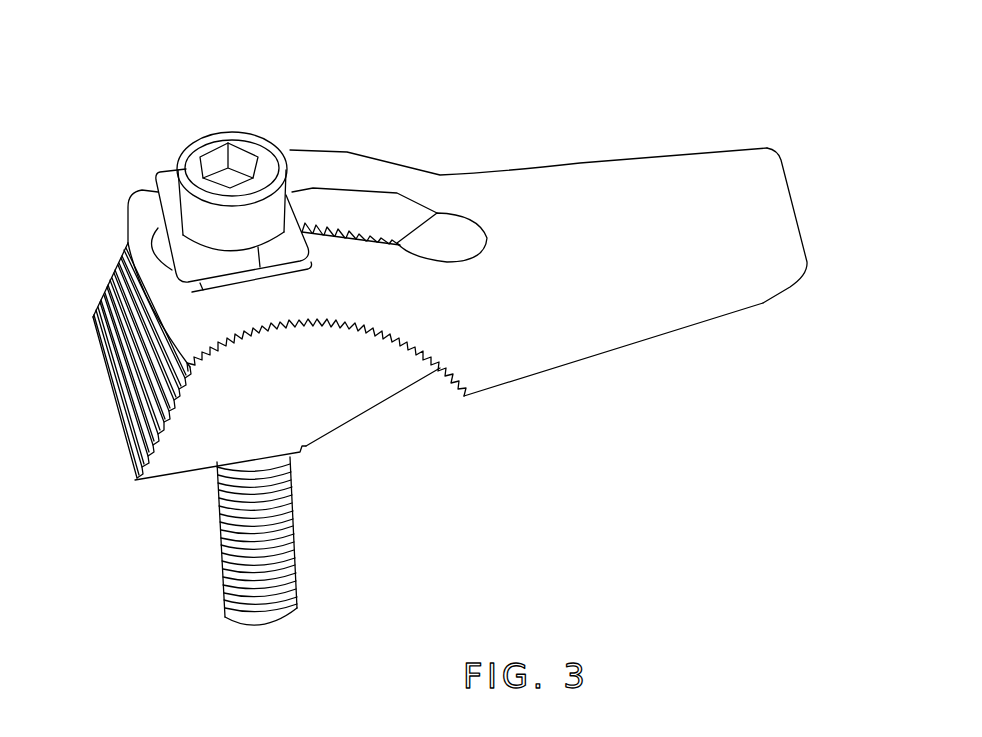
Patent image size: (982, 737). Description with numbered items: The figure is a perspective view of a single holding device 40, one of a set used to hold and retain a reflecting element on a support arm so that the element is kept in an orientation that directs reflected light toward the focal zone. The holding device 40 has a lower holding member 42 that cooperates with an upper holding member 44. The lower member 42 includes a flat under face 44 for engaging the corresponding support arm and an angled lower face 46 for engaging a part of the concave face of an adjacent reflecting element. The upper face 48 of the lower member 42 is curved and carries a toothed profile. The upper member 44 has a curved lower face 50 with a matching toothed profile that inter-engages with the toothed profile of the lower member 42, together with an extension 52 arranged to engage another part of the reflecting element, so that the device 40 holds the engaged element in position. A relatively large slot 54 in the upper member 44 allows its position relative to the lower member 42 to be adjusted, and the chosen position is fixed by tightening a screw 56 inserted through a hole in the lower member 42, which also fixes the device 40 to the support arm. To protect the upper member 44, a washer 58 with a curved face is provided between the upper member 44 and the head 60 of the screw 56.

The holding device 40 is at (437, 337).
The lower holding member 42 is at (280, 352).
The upper holding member 44 is at (548, 272).
The angled lower face 46 is at (377, 407).
The upper face 48 is at (113, 257).
The curved lower face 50 is at (447, 393).
The extension 52 is at (765, 305).
The slot 54 is at (393, 220).
The screw 56 is at (225, 567).
The washer 58 is at (167, 167).
The head 60 is at (257, 142).